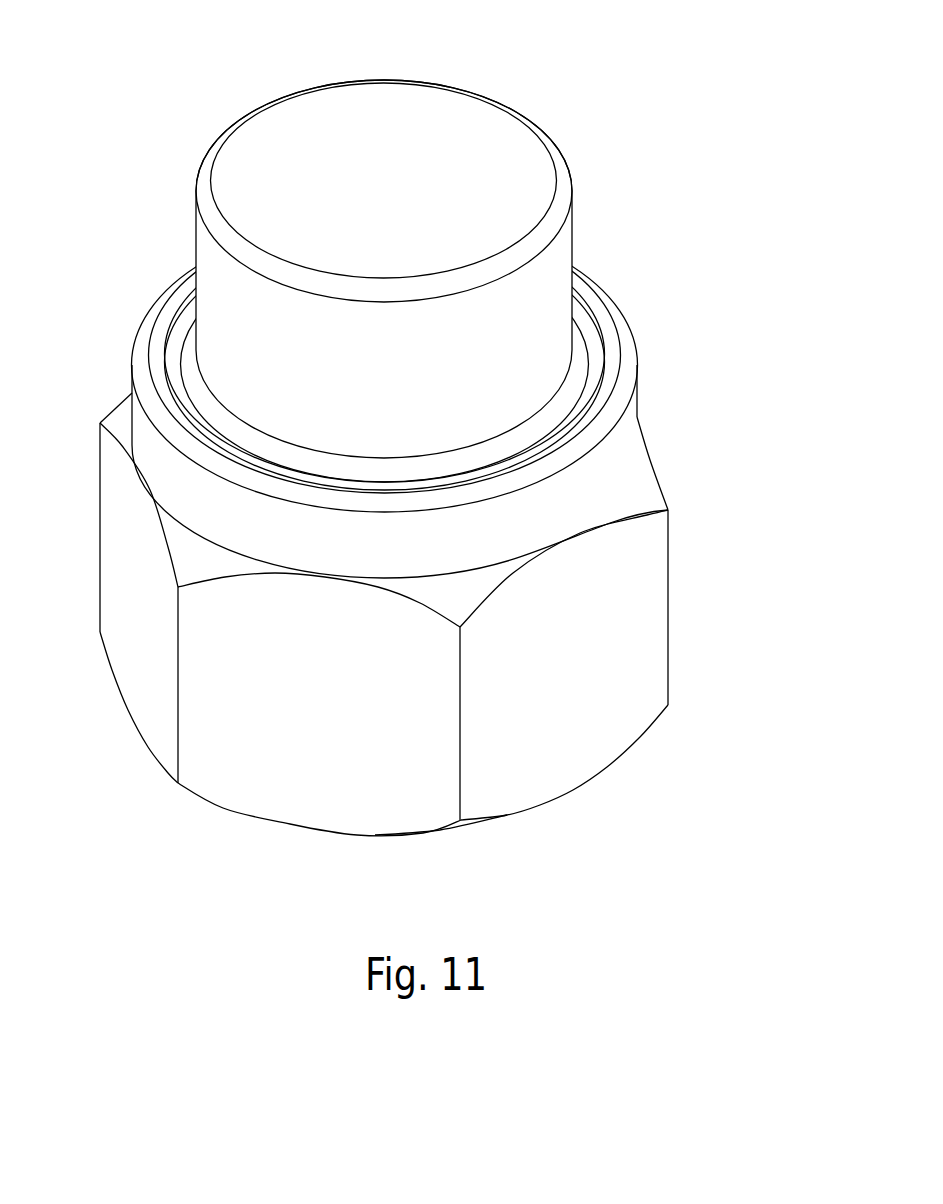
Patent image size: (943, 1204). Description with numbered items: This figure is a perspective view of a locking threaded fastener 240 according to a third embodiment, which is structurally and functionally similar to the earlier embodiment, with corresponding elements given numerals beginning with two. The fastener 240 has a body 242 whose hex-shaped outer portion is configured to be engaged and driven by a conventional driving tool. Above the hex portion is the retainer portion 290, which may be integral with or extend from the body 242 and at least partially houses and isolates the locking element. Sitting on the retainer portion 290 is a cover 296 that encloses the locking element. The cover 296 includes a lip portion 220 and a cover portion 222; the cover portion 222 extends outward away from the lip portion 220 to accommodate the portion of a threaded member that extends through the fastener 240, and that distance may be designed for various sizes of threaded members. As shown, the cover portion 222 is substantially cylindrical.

The lip portion 220 is at (203, 400).
The cover portion 222 is at (523, 175).
The threaded fastener 240 is at (632, 243).
The body 242 is at (690, 570).
The retainer portion 290 is at (662, 385).
The cover 296 is at (187, 148).